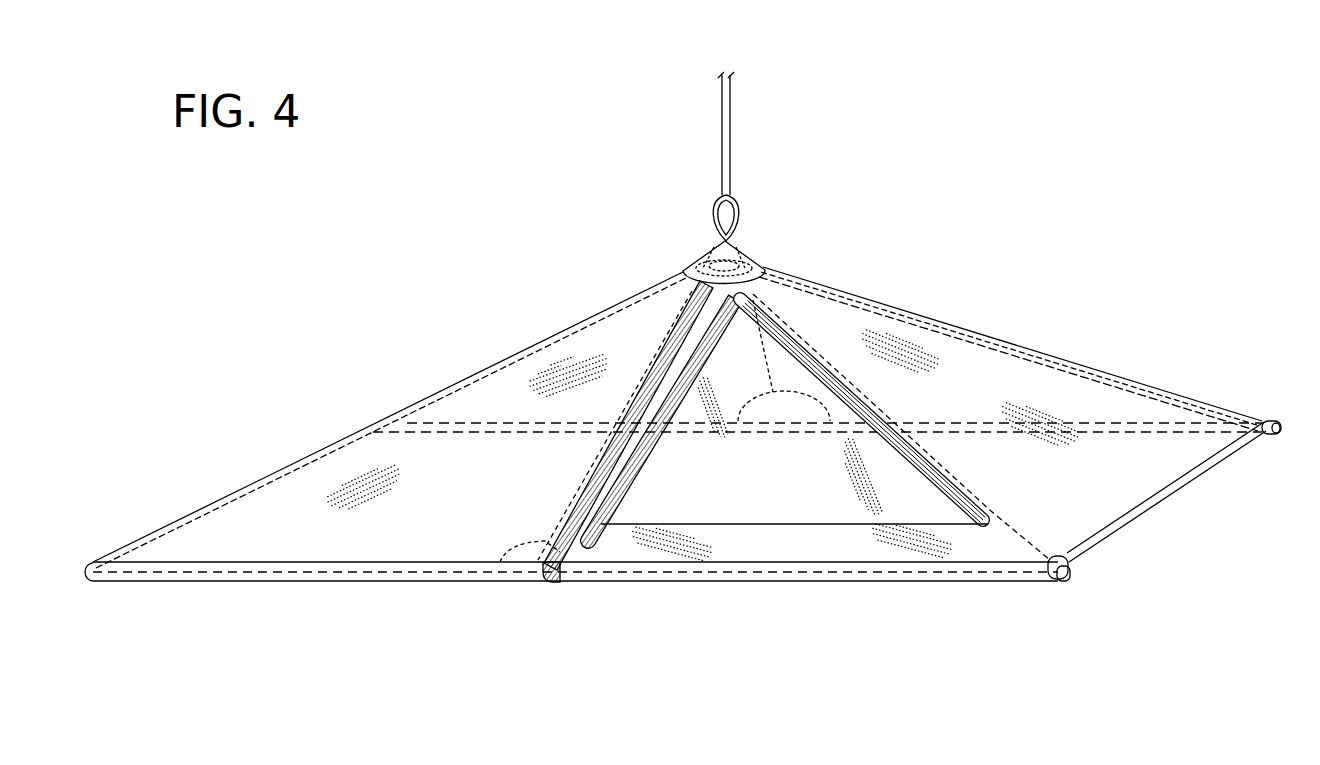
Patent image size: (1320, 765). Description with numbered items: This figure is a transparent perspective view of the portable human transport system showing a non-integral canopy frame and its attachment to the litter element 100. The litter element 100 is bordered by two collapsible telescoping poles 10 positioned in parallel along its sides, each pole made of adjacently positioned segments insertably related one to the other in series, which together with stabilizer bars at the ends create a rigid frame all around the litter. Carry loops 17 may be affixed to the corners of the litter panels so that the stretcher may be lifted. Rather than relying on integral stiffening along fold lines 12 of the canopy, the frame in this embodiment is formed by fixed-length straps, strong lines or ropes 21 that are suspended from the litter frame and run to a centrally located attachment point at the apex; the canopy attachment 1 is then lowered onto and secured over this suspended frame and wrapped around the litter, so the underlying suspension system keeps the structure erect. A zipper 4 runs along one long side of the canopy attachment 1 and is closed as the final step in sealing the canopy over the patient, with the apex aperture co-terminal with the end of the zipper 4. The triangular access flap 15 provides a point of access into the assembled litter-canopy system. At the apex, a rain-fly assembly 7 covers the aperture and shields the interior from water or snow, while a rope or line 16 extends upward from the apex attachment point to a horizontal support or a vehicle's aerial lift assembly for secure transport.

The canopy attachment 1 is at (413, 356).
The zipper 4 is at (632, 400).
The rain-fly assembly 7 is at (745, 263).
The collapsible telescoping poles 10 is at (1268, 418).
The fold lines 12 is at (1000, 517).
The access flap 15 is at (782, 492).
The rope or line 16 is at (733, 137).
The carry loops 17 is at (526, 542).
The straps, lines or ropes 21 is at (951, 326).
The litter element 100 is at (522, 479).